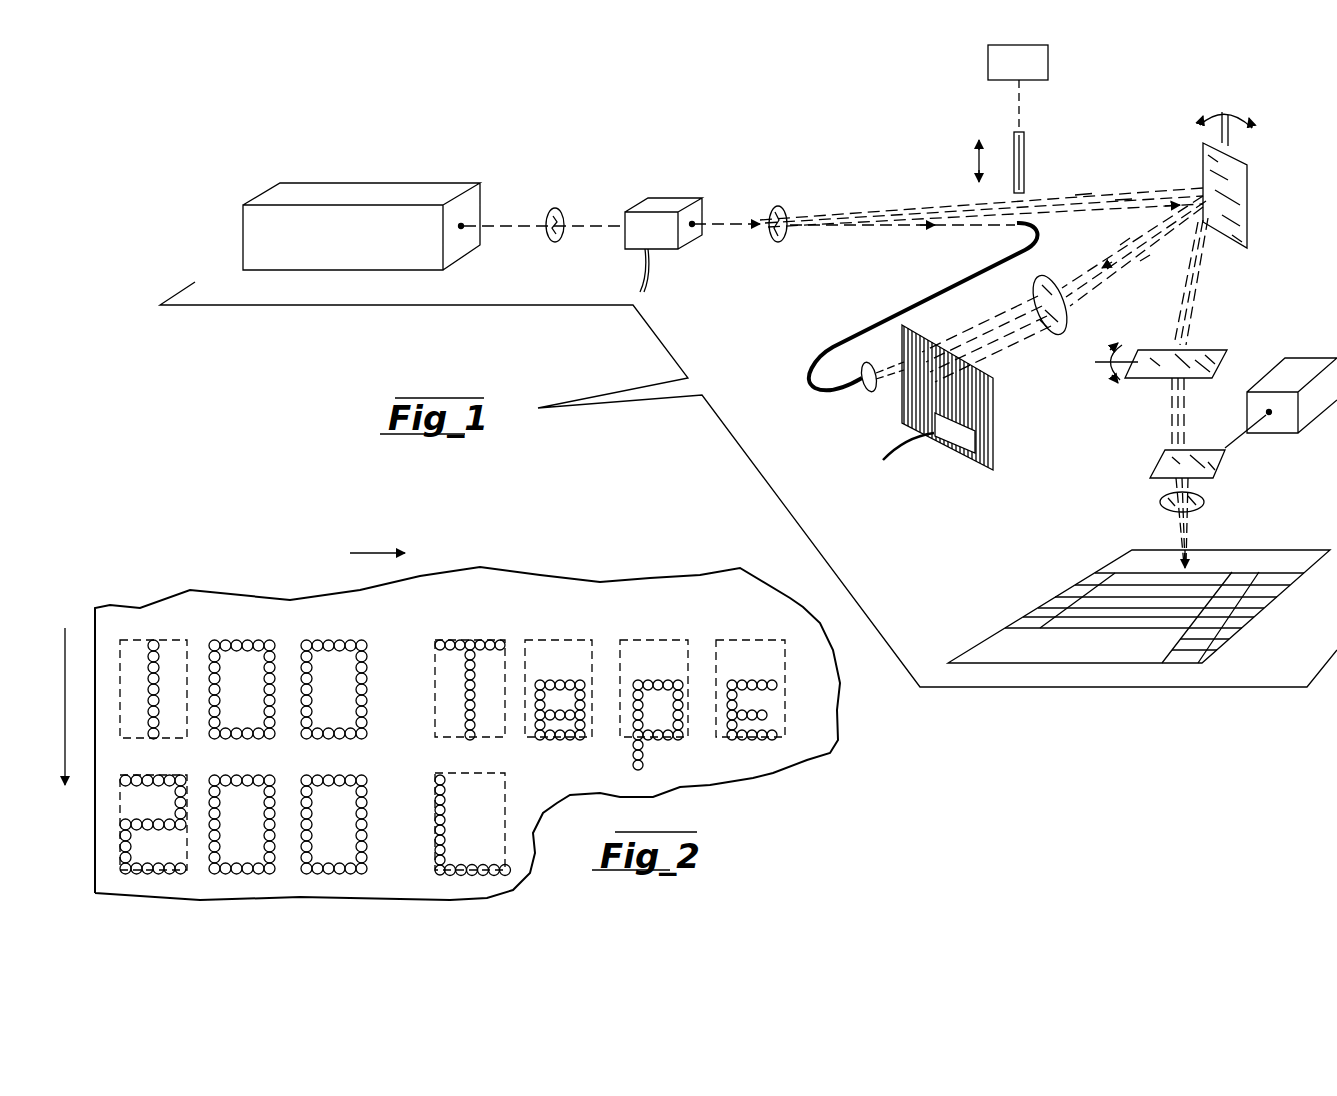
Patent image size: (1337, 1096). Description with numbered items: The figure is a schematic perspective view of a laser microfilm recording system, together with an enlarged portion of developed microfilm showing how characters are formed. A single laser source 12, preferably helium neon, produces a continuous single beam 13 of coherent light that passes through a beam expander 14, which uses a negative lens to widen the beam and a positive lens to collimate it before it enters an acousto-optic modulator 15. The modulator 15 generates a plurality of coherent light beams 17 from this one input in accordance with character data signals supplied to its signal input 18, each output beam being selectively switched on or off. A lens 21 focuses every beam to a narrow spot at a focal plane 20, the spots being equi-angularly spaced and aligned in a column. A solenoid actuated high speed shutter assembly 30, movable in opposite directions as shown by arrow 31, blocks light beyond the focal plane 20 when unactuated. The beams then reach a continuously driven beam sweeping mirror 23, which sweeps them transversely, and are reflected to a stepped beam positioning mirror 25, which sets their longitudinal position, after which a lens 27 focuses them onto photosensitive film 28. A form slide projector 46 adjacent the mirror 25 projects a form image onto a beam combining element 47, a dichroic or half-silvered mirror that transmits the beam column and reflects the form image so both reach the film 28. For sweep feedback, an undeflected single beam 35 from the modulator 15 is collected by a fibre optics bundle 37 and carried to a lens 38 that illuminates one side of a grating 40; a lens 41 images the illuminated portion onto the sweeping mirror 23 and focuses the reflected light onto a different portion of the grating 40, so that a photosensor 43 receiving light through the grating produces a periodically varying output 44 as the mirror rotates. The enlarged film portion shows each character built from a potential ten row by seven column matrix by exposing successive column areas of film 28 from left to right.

In FIG. 1, the laser source 12 is at (404, 195).
In FIG. 1, the single beam 13 is at (504, 214).
In FIG. 1, the beam expander 14 is at (557, 208).
In FIG. 1, the acousto-optic modulator 15 is at (663, 200).
In FIG. 1, the plurality of coherent light beams 17 is at (888, 193).
In FIG. 1, the signal input 18 is at (646, 265).
In FIG. 1, the focal plane 20 is at (1024, 165).
In FIG. 1, the lens 21 is at (783, 205).
In FIG. 1, the beam sweeping mirror 23 is at (1203, 168).
In FIG. 1, the beam positioning mirror 25 is at (1215, 350).
In FIG. 1, the lens 27 is at (1160, 502).
In FIG. 1, the photosensitive film 28 is at (990, 648).
In FIG. 2, the photosensitive film 28 is at (578, 588).
In FIG. 1, the shutter assembly 30 is at (988, 72).
In FIG. 1, the arrow 31 is at (975, 165).
In FIG. 1, the single beam 35 is at (850, 238).
In FIG. 1, the fibre optics bundle 37 is at (827, 345).
In FIG. 1, the lens 38 is at (864, 388).
In FIG. 1, the grating 40 is at (914, 340).
In FIG. 1, the lens 41 is at (1037, 292).
In FIG. 1, the photosensor 43 is at (965, 442).
In FIG. 1, the output 44 is at (910, 464).
In FIG. 1, the form slide projector 46 is at (1290, 365).
In FIG. 1, the beam combining element 47 is at (1160, 462).